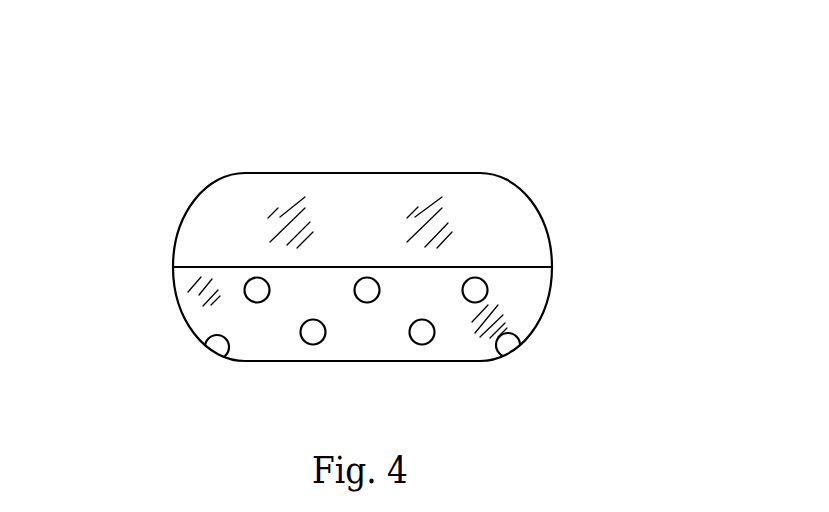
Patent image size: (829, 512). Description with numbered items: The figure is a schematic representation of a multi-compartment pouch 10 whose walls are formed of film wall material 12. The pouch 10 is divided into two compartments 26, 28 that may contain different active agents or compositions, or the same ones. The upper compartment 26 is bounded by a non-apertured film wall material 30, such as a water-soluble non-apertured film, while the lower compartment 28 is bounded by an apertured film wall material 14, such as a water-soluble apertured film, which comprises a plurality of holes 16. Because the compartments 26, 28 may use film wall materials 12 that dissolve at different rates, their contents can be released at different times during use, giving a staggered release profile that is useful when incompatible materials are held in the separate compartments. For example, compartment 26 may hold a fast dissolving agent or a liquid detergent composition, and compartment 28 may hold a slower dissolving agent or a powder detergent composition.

The pouch 10 is at (622, 84).
The film wall material 12 is at (387, 192).
The apertured film wall material 14 is at (282, 347).
The holes 16 is at (417, 345).
The compartment 26 is at (522, 253).
The compartment 28 is at (508, 342).
The non-apertured film wall material 30 is at (207, 213).